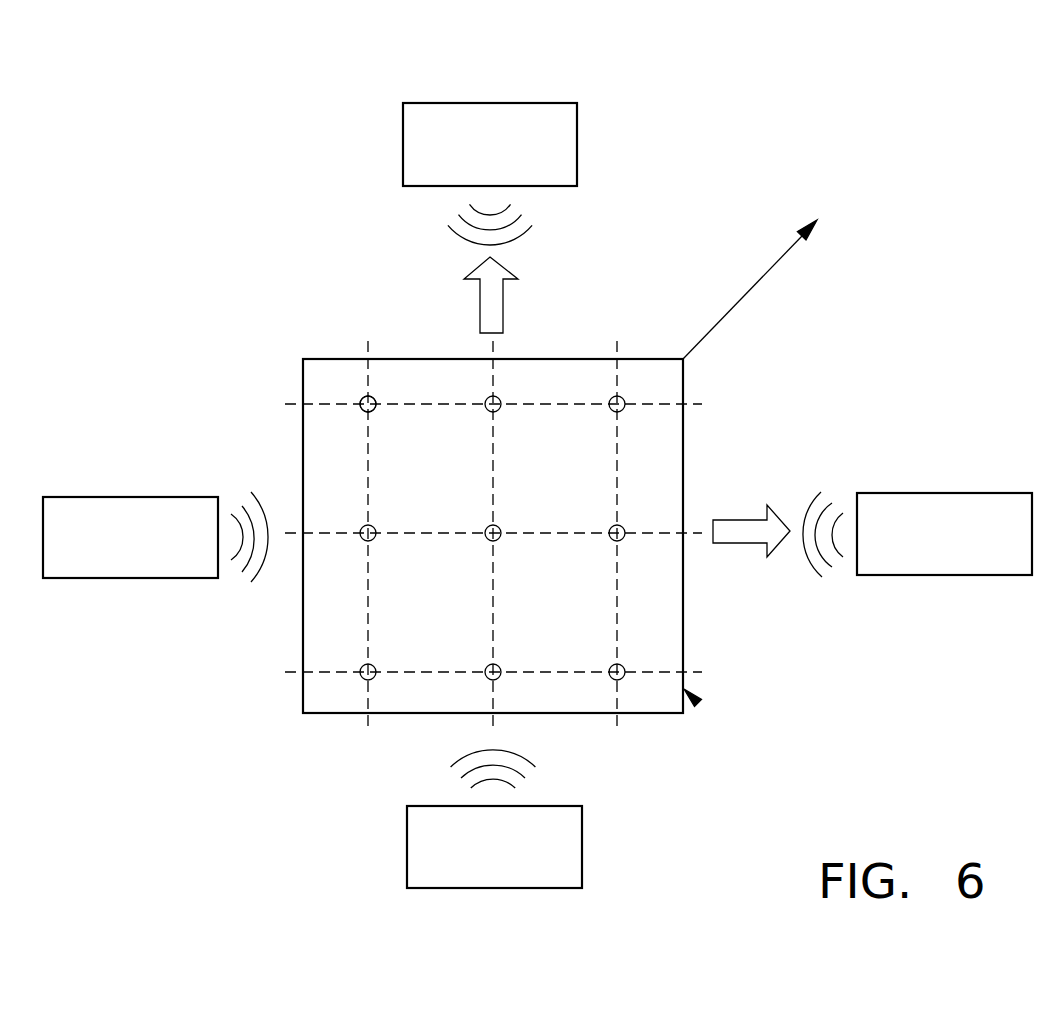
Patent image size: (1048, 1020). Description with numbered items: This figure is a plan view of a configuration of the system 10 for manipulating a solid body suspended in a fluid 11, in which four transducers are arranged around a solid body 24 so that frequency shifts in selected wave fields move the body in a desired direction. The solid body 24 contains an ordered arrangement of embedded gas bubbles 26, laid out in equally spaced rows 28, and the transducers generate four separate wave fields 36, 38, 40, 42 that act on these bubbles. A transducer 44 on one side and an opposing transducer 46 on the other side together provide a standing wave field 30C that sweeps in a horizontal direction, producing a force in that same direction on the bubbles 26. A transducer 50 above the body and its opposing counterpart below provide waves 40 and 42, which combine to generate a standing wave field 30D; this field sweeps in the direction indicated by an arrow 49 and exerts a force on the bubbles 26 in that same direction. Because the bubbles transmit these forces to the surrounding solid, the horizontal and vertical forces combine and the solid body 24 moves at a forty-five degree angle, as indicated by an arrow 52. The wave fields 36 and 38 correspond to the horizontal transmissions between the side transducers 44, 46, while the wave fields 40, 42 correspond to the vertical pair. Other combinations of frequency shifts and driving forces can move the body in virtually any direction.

The system for manipulating a solid body suspended in a fluid 10 is at (200, 237).
The fluid 11 is at (267, 628).
The solid body 24 is at (698, 703).
The embedded gas bubbles 26 is at (497, 410).
The rows of bubbles 28 is at (358, 395).
The standing wave field 30C is at (370, 351).
The standing wave field 30D is at (692, 400).
The wave field 36 is at (253, 494).
The wave field 38 is at (810, 557).
The waves 40 is at (427, 806).
The waves 42 is at (513, 240).
The transducer 44 is at (133, 497).
The transducer 46 is at (937, 493).
The arrow 49 is at (480, 305).
The transducer 50 is at (487, 103).
The arrow 52 is at (753, 283).